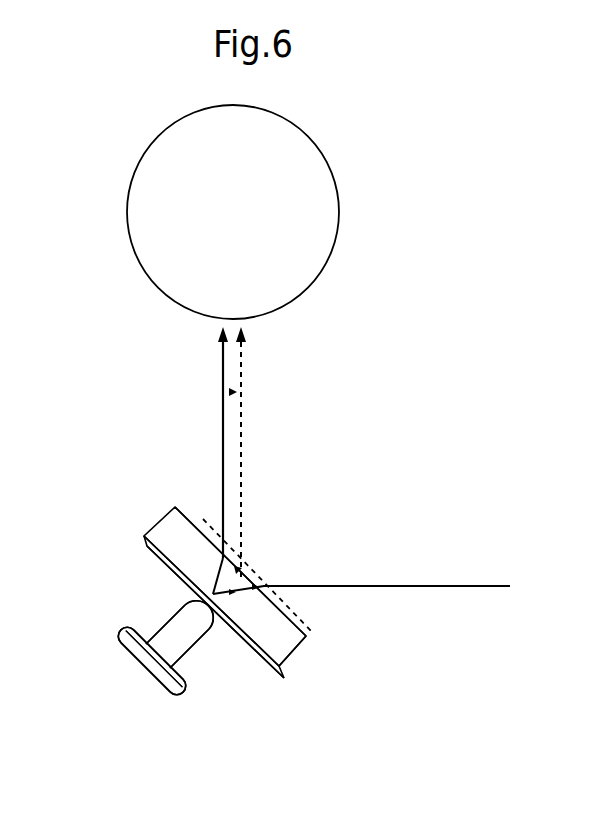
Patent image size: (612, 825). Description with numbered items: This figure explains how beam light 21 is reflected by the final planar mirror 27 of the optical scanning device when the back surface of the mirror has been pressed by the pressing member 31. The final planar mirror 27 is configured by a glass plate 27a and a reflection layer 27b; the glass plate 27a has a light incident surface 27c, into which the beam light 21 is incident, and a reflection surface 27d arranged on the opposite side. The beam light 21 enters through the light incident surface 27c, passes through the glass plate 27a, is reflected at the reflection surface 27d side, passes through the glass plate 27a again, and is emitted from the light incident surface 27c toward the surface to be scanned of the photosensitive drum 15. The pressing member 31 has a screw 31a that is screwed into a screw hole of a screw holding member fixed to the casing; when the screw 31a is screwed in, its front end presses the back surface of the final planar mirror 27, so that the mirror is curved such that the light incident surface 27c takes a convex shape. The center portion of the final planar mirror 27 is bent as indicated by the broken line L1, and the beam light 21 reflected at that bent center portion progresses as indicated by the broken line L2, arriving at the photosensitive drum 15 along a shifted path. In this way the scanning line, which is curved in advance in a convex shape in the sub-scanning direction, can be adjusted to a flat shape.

The photosensitive drum 15 is at (320, 204).
The beam light 21 is at (448, 585).
The final planar mirror 27 is at (384, 660).
The glass plate 27a is at (286, 646).
The reflection layer 27b is at (276, 673).
The light incident surface 27c is at (307, 636).
The reflection surface 27d is at (249, 650).
The screw 31a is at (143, 678).
The pressing member 31 is at (150, 678).
The broken line indicating bent center portion L1 is at (203, 519).
The broken line indicating reflected beam light L2 is at (244, 425).